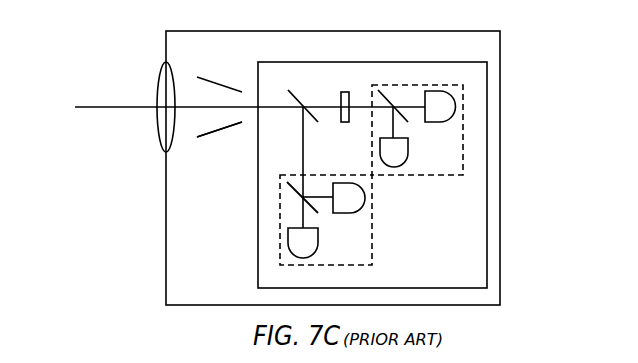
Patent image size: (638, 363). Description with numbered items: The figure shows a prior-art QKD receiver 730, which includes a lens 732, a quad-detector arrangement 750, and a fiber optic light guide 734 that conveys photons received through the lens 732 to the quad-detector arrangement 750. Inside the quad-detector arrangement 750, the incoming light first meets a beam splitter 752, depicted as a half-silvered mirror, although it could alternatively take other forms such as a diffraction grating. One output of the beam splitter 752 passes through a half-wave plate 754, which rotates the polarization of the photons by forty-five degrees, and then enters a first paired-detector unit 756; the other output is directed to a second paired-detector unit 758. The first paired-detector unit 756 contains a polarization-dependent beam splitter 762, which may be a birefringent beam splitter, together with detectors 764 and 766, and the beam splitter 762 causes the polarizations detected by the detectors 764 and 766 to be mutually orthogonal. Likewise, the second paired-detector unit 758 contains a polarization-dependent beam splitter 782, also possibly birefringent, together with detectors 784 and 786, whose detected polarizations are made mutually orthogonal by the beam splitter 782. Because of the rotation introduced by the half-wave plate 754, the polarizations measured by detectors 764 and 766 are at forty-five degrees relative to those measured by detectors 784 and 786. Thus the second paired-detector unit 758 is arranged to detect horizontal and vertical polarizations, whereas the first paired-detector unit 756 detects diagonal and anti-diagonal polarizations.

The QKD receiver 730 is at (427, 54).
The lens 732 is at (158, 93).
The fiber optic light guide 734 is at (212, 130).
The quad-detector arrangement 750 is at (463, 286).
The beam splitter 752 is at (297, 99).
The half-wave plate 754 is at (345, 123).
The first paired-detector unit 756 is at (453, 168).
The second paired-detector unit 758 is at (362, 260).
The polarization-dependent beam splitter 762 is at (387, 93).
The detector 764 is at (433, 90).
The detector 766 is at (410, 150).
The polarization-dependent beam splitter 782 is at (293, 178).
The detector 784 is at (320, 238).
The detector 786 is at (367, 200).